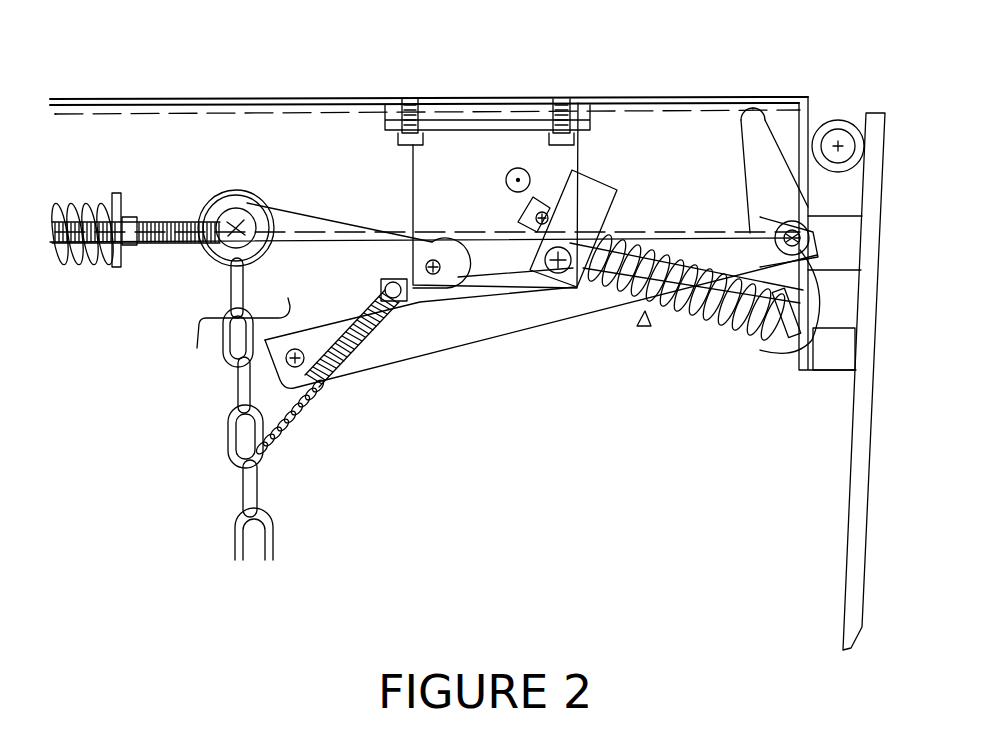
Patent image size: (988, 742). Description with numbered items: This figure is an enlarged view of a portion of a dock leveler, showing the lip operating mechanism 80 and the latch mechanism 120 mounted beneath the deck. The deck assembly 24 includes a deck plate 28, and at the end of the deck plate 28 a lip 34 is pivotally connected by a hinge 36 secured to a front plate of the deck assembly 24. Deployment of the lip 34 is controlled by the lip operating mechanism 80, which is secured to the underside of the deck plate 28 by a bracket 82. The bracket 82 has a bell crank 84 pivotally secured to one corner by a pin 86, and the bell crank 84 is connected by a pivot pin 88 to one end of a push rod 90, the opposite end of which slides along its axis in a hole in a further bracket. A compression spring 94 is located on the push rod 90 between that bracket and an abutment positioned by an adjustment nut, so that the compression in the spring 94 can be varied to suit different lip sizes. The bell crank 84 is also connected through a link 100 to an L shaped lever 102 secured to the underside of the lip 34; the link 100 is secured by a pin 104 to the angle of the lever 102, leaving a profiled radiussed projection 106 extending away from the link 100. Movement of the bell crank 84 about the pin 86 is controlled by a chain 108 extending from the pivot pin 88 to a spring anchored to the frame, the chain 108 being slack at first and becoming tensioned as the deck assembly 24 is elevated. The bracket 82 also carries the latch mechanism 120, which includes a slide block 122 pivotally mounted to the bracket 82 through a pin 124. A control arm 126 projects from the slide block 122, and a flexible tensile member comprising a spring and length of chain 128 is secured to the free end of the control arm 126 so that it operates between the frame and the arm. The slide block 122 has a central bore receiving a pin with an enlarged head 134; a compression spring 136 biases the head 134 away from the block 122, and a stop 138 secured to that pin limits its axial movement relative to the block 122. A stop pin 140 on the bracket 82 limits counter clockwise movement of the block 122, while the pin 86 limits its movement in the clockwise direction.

The deck assembly 24 is at (184, 128).
The deck plate 28 is at (221, 99).
The lip 34 is at (857, 506).
The hinge 36 is at (837, 119).
The lip operating mechanism 80 is at (332, 195).
The bracket 82 is at (474, 155).
The bell crank 84 is at (234, 346).
The pin 86 is at (420, 260).
The pivot pin 88 is at (240, 191).
The push rod 90 is at (193, 243).
The compression spring 94 is at (84, 204).
The link 100 is at (523, 313).
The L shaped lever 102 is at (762, 193).
The pin 104 is at (793, 333).
The profiled radiussed projection 106 is at (740, 127).
The chain 108 is at (237, 388).
The latch mechanism 120 is at (649, 327).
The slide block 122 is at (598, 193).
The pin 124 is at (535, 260).
The control arm 126 is at (488, 290).
The spring and length of chain 128 is at (307, 392).
The enlarged head 134 is at (767, 340).
The compression spring 136 is at (667, 297).
The stop 138 is at (546, 165).
The stop pin 140 is at (506, 181).